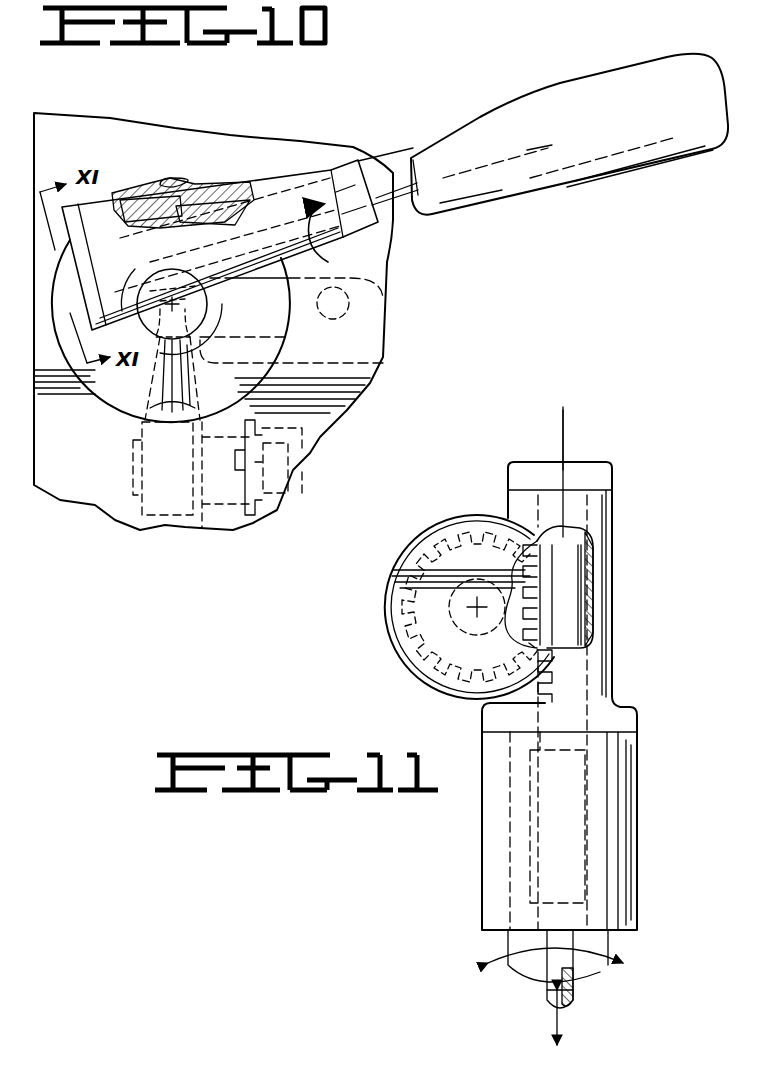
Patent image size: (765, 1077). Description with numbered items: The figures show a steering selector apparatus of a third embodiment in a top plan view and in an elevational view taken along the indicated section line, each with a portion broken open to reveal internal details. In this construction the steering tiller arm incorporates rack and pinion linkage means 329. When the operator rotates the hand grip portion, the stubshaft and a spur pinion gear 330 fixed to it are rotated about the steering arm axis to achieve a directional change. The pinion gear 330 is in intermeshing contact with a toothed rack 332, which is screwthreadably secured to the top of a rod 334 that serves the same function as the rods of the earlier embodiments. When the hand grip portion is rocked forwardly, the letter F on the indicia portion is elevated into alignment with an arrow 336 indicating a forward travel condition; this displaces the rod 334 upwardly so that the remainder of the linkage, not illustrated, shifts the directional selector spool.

In FIG. 10, the rack and pinion linkage means 329 is at (248, 143).
In FIG. 11, the rack and pinion linkage means 329 is at (455, 680).
In FIG. 10, the spur pinion gear 330 is at (180, 196).
In FIG. 11, the spur pinion gear 330 is at (515, 634).
In FIG. 10, the toothed rack 332 is at (190, 312).
In FIG. 11, the toothed rack 332 is at (555, 593).
In FIG. 10, the arrow 336 is at (342, 240).
In FIG. 11, the rod 334 is at (545, 988).